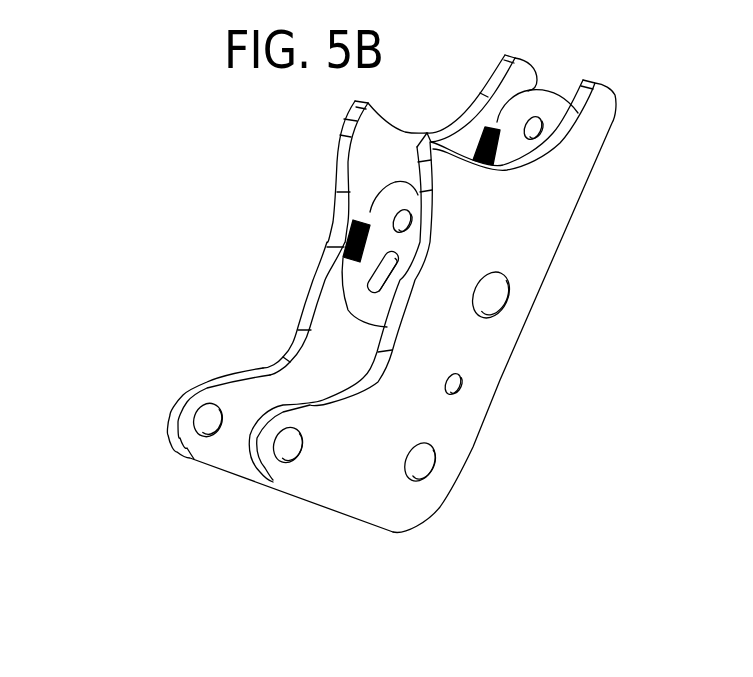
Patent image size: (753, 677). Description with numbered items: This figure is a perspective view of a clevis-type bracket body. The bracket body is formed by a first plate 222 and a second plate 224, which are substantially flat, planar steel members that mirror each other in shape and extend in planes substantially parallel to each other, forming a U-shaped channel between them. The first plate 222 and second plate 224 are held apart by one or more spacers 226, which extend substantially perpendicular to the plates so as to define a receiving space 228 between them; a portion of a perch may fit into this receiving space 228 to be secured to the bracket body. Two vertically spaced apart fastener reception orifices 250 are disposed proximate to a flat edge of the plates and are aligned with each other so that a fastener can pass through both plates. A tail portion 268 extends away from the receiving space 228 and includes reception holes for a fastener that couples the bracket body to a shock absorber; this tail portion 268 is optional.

The first plate 222 is at (323, 328).
The second plate 224 is at (477, 357).
The spacer 226 is at (388, 210).
The receiving space 228 is at (307, 360).
The fastener reception orifice 250 is at (497, 311).
The tail portion 268 is at (177, 420).